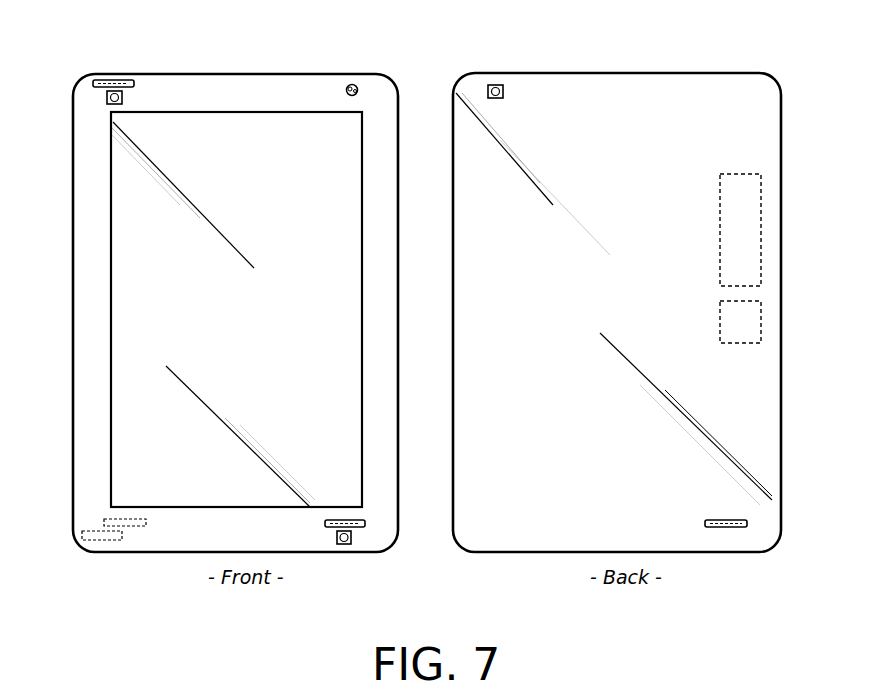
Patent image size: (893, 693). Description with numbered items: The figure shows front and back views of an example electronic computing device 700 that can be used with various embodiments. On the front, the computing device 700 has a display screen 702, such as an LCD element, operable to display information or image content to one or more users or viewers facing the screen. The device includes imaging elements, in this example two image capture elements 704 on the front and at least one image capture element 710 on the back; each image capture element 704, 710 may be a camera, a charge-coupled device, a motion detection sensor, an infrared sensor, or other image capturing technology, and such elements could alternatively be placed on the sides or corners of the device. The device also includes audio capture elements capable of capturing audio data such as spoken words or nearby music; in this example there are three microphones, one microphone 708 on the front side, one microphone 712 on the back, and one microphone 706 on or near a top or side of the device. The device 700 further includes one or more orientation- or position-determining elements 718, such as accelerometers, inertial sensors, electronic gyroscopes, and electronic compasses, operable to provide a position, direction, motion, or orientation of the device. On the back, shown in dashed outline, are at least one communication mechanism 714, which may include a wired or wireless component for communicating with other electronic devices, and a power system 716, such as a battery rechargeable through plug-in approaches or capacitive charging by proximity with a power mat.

The electronic computing device 700 is at (808, 76).
The display screen 702 is at (111, 225).
The image capture elements 704 is at (107, 97).
The microphone 706 is at (121, 81).
The microphone 708 is at (355, 527).
The image capture element 710 is at (351, 86).
The microphone 712 is at (125, 527).
The communication mechanism 714 is at (760, 248).
The power system 716 is at (760, 323).
The orientation- or position-determining elements 718 is at (102, 540).